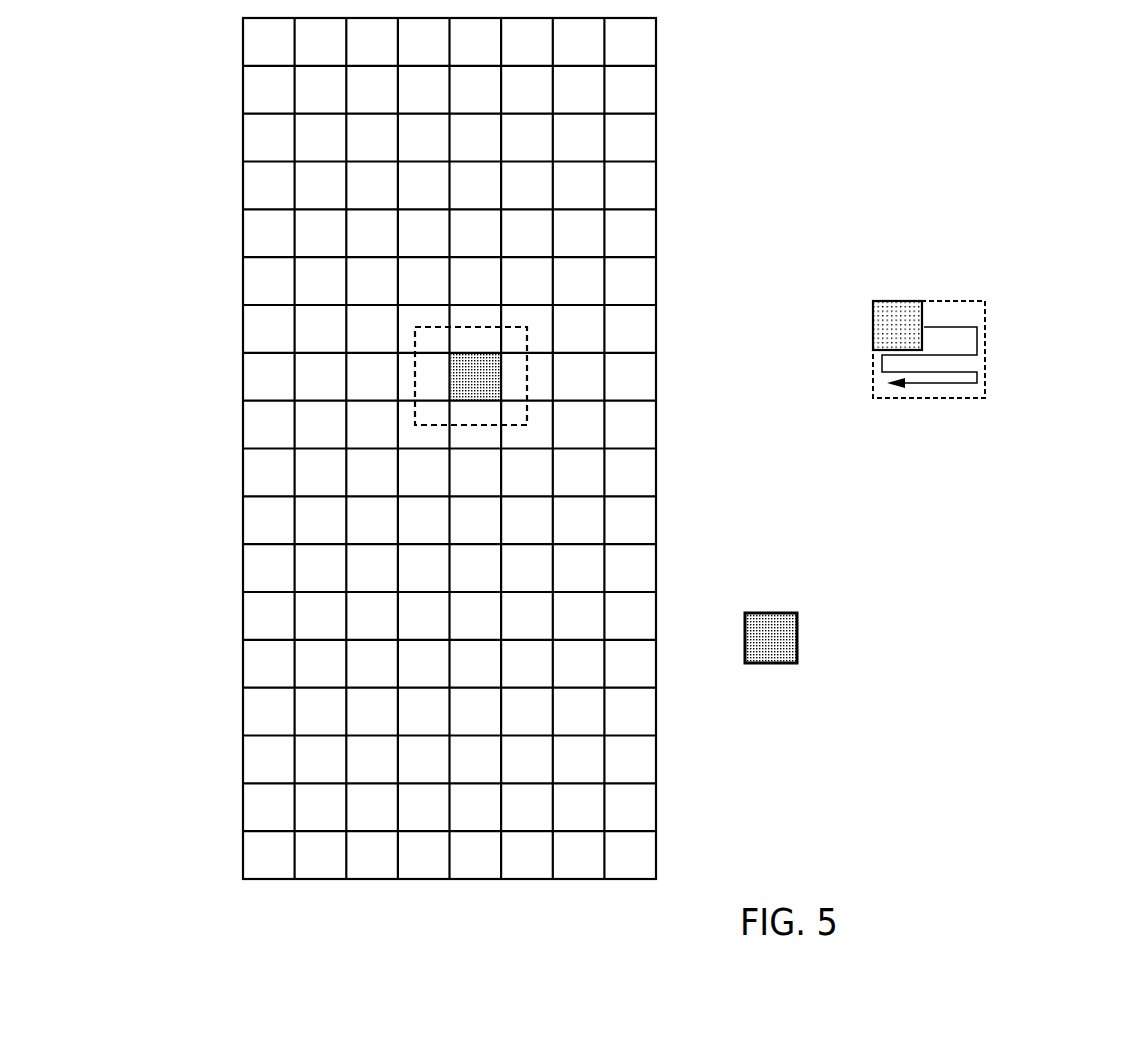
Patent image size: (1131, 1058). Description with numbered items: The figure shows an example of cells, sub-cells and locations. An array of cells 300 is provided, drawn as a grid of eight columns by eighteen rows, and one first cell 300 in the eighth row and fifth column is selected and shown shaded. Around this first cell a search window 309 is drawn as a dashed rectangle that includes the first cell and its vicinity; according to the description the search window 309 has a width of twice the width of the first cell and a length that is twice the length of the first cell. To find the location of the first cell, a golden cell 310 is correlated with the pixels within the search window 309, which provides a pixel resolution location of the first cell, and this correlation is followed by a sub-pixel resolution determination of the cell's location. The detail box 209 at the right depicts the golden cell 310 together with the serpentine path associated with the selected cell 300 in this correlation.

The cell 300 is at (685, 44).
The search window 309 is at (414, 374).
The detailed view of region (8,5) with readout path 209 is at (950, 300).
The golden cell 310 is at (883, 305).